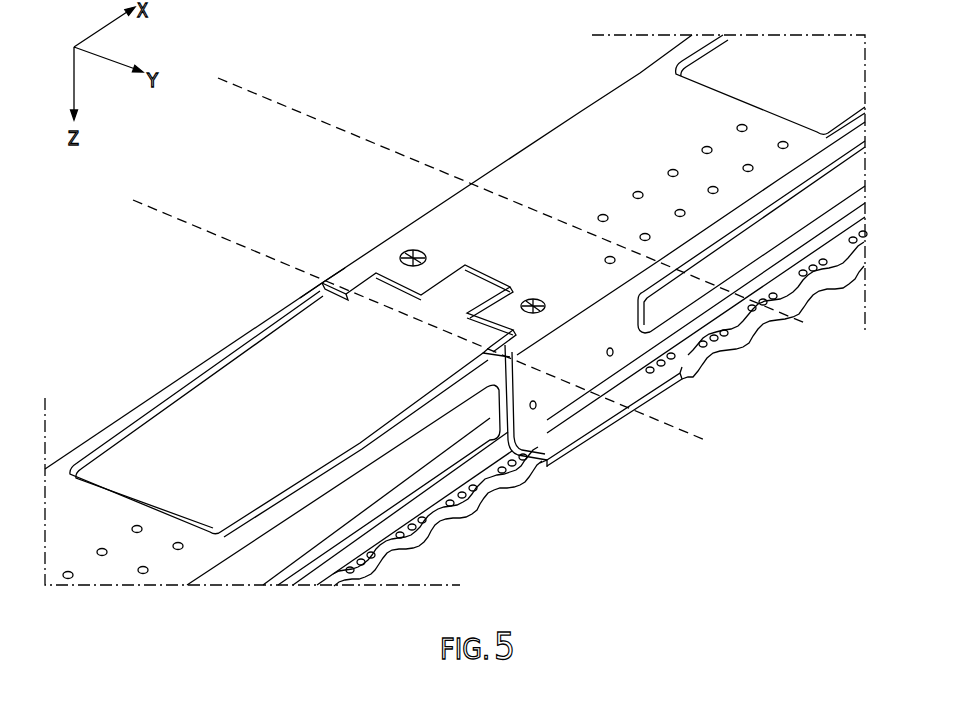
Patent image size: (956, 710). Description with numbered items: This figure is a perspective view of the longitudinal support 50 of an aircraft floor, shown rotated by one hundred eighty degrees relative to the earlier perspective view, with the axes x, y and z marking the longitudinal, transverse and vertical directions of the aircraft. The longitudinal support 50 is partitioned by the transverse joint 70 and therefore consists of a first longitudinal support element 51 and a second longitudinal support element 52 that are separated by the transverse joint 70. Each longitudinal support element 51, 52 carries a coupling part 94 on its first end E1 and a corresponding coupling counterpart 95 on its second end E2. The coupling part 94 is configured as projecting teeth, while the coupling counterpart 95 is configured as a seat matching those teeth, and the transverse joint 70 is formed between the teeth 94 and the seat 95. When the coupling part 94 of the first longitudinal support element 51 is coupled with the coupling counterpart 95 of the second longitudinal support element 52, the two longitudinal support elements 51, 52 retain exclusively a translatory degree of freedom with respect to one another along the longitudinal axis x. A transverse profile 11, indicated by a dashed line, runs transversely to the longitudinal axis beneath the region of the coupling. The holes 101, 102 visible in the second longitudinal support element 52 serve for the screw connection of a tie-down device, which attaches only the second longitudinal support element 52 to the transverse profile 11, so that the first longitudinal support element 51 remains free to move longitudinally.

The transverse profile 11 is at (319, 112).
The longitudinal support 50 is at (409, 135).
The first longitudinal support element 51 is at (187, 373).
The second longitudinal support element 52 is at (528, 145).
The transverse joint 70 is at (322, 284).
The coupling part 94 is at (477, 290).
The coupling counterpart 95 is at (520, 345).
The hole 101 is at (410, 251).
The hole 102 is at (535, 300).
The first end E1 is at (321, 285).
The second end E2 is at (323, 283).